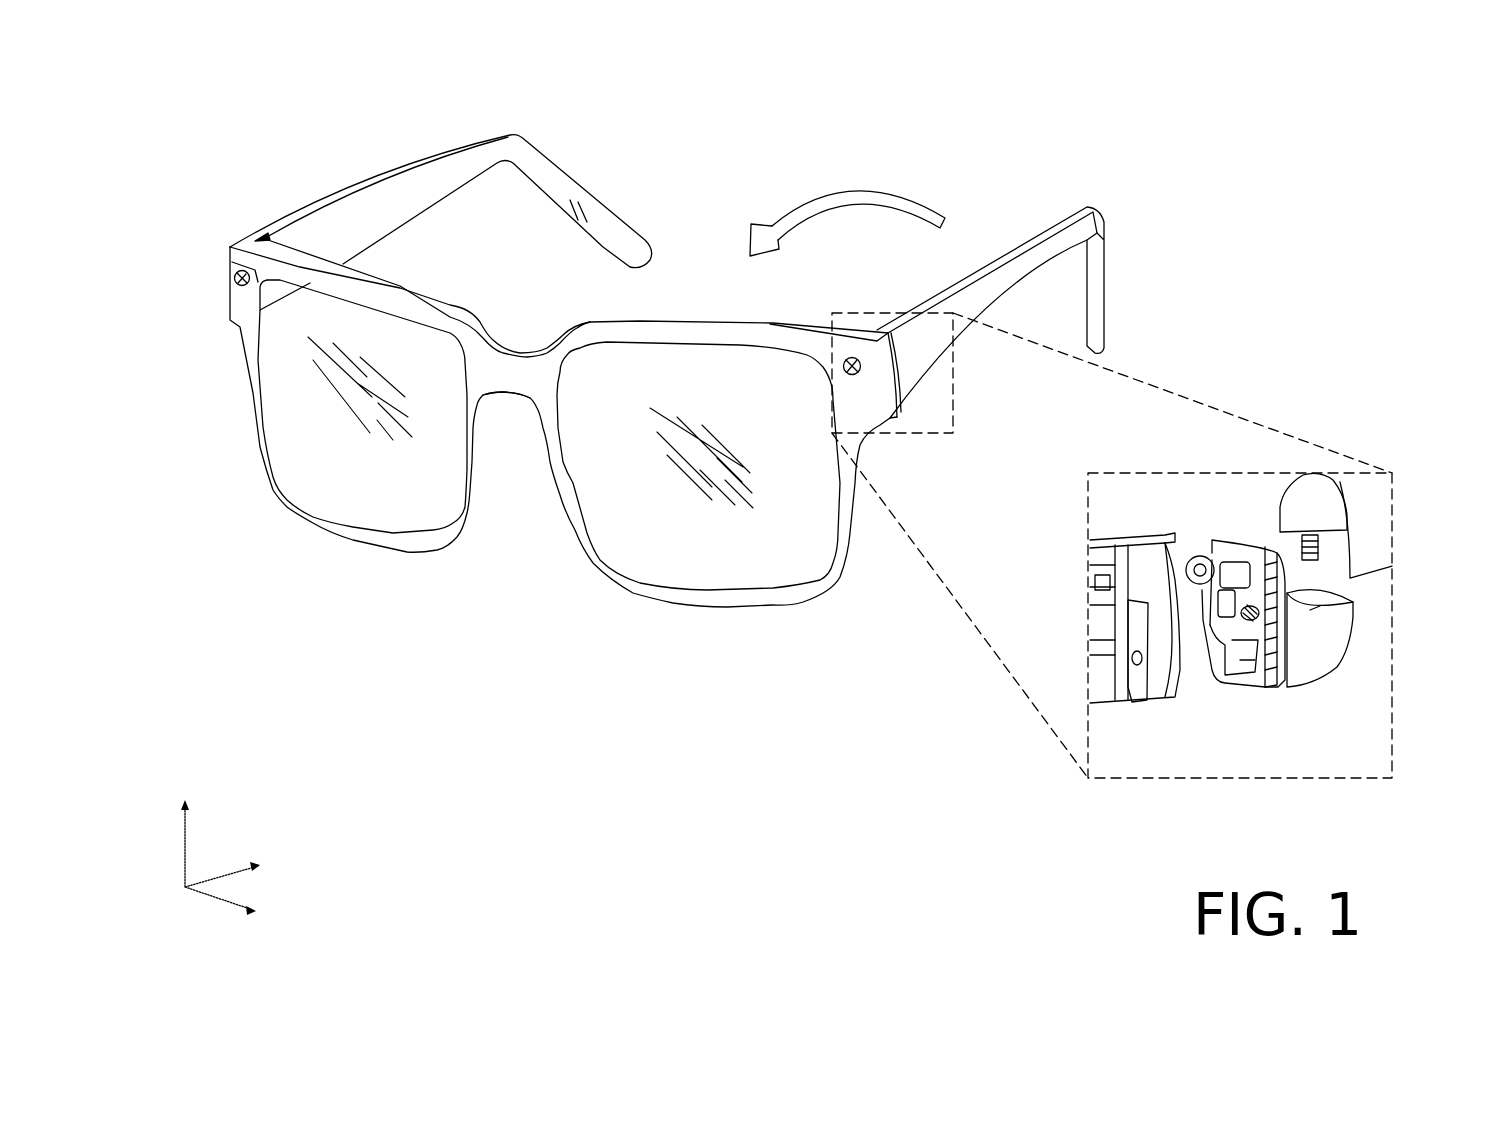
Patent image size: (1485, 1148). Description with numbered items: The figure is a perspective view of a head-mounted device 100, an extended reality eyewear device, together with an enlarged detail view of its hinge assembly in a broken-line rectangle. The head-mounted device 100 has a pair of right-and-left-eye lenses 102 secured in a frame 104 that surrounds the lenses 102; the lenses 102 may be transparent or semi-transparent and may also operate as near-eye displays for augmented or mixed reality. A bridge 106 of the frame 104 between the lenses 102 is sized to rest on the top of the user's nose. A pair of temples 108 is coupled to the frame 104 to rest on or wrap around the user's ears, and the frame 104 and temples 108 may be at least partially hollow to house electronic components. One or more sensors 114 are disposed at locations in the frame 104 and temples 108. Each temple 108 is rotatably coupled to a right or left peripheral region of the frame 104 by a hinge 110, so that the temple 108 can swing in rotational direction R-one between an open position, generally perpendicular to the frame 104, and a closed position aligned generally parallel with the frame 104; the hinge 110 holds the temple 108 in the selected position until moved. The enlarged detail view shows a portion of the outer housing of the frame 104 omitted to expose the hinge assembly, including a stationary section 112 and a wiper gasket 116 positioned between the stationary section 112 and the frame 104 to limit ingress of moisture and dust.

The head-mounted device 100 is at (188, 90).
The lenses 102 is at (283, 440).
The frame 104 is at (351, 530).
The bridge 106 is at (503, 389).
The temples 108 is at (390, 190).
The hinge 110 is at (255, 229).
The stationary section 112 is at (1330, 662).
The sensors 114 is at (235, 271).
The wiper gasket 116 is at (1265, 690).